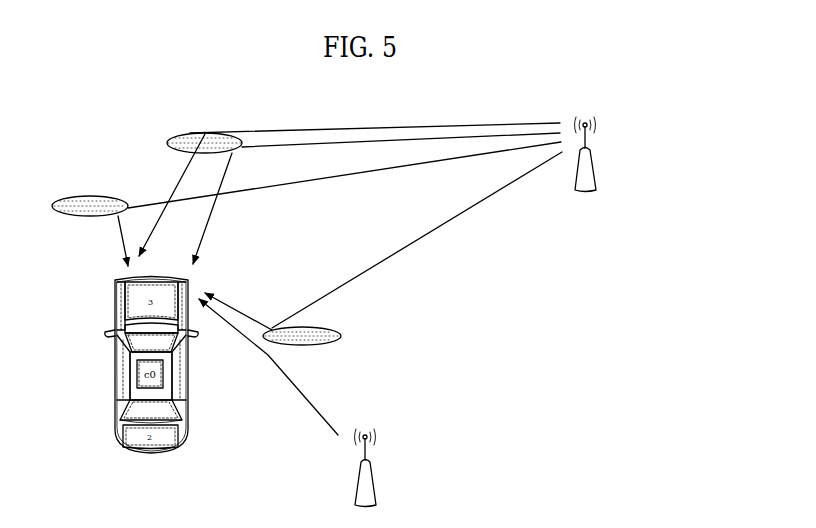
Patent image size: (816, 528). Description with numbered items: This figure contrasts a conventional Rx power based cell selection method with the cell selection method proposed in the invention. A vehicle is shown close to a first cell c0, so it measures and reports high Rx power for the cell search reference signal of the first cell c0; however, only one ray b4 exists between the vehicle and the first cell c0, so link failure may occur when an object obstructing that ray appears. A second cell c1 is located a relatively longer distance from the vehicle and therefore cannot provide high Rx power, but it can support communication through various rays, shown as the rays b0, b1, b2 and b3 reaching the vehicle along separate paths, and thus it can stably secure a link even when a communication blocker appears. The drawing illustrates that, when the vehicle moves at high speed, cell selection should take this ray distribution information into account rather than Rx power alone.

The beam b0 from base station c1 b0 is at (90, 231).
The beam b1 from base station c1 b1 is at (190, 194).
The beam b2 from base station c1 b2 is at (212, 208).
The beam b3 from base station c1 b3 is at (273, 308).
The ray b4 from base station c0 b4 is at (272, 367).
The first cell c0 is at (494, 468).
The second cell c1 is at (593, 171).